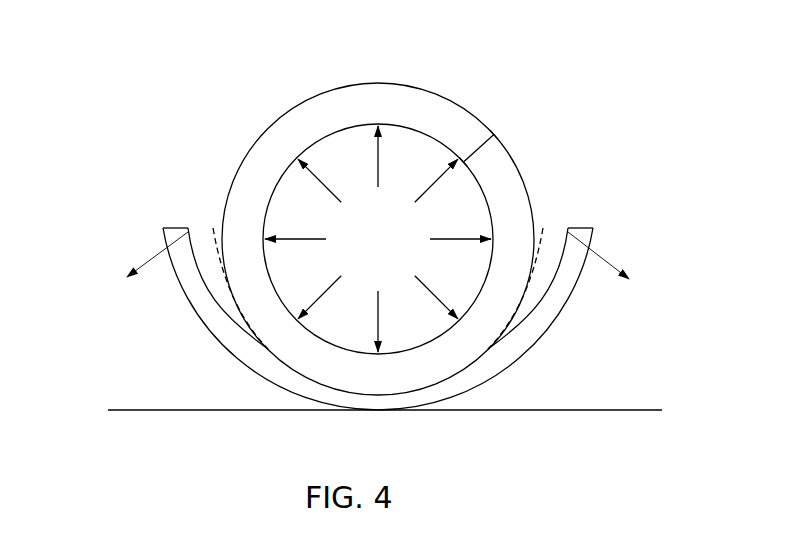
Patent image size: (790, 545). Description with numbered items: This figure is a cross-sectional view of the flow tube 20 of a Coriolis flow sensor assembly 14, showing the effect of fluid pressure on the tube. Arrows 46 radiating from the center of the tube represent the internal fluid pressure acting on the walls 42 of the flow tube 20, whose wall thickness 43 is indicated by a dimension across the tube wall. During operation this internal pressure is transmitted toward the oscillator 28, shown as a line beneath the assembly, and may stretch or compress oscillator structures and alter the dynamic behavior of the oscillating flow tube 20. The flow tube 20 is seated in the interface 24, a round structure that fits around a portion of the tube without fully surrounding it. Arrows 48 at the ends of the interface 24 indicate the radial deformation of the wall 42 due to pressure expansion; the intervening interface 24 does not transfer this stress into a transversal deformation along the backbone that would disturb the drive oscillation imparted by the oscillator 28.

The sensor assembly 14 is at (169, 59).
The flow tube 20 is at (416, 77).
The flow tube walls 42 is at (317, 121).
The wall thickness 43 is at (481, 149).
The fluid pressure arrows 46 is at (436, 303).
The interface 24 is at (175, 226).
The radial deformation arrows 48 is at (607, 257).
The oscillator 28 is at (552, 412).